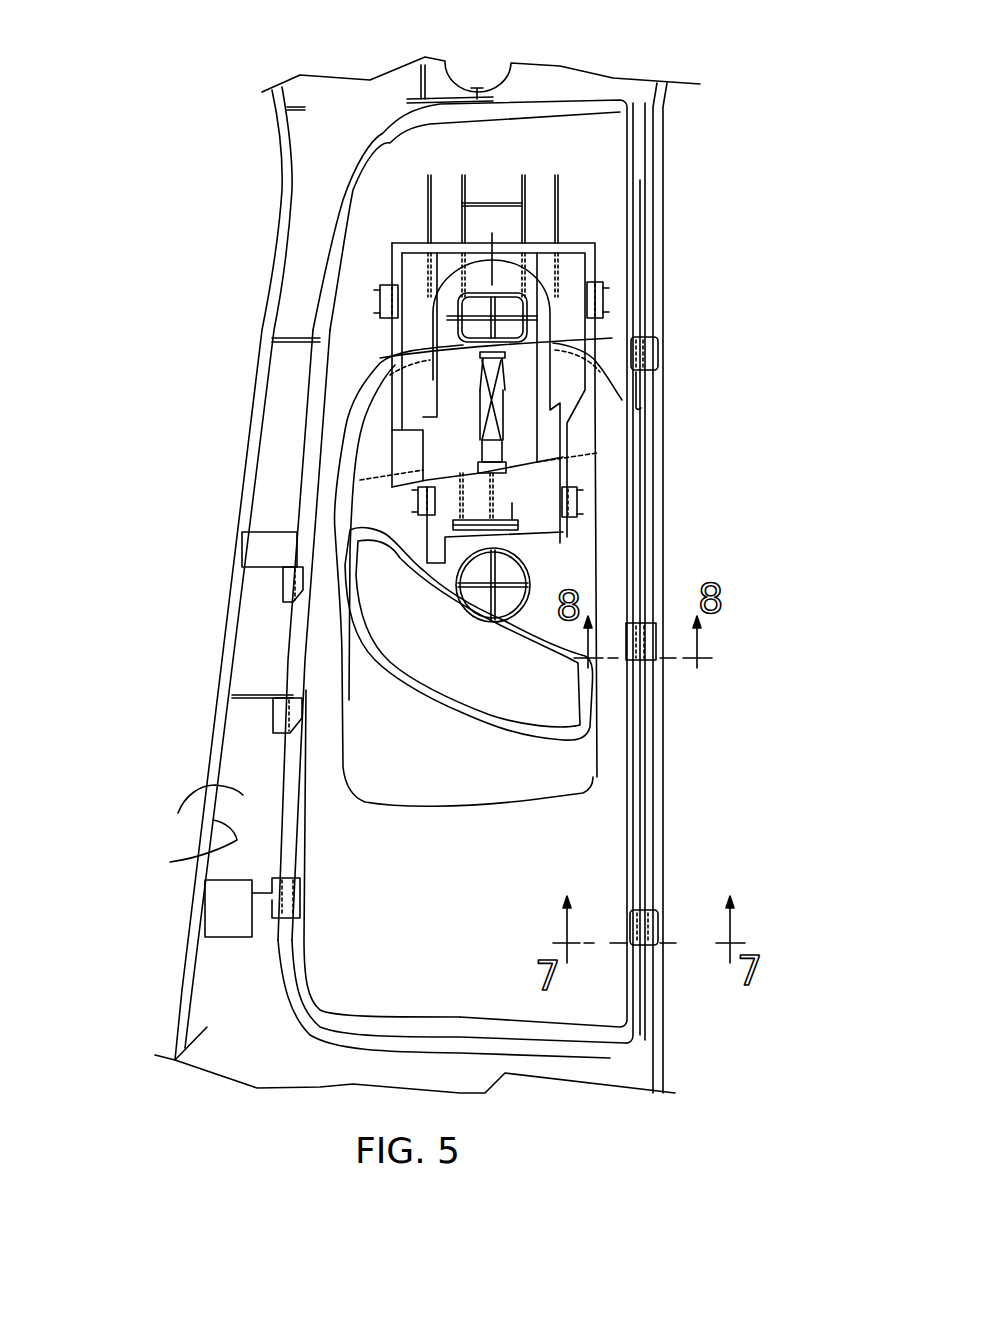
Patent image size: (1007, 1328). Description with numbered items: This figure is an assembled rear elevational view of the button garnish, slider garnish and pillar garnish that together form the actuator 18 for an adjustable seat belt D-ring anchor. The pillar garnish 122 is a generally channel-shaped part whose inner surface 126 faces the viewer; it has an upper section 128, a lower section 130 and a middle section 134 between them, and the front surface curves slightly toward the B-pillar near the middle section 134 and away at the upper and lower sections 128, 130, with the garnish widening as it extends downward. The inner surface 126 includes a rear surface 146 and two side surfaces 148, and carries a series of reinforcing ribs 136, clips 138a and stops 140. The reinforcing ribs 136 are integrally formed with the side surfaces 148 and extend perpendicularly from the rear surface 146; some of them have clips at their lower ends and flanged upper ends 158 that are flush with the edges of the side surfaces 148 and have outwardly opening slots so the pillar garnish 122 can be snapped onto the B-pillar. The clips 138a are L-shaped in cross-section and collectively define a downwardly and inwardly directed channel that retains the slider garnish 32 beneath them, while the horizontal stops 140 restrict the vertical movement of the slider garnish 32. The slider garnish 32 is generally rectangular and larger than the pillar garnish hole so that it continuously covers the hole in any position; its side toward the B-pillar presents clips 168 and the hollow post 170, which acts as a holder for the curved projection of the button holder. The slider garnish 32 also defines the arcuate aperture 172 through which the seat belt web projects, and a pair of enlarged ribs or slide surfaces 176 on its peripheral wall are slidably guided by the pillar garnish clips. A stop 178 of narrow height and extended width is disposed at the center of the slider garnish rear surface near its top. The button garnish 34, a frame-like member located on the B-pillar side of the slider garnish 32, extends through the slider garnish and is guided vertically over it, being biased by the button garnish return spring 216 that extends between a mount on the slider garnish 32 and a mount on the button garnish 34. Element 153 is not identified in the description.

The actuator 18 is at (178, 778).
The slider garnish 32 is at (607, 205).
The button garnish 34 is at (573, 335).
The pillar garnish 122 is at (175, 1060).
The inner surface 126 is at (215, 990).
The upper section 128 is at (550, 76).
The lower section 130 is at (622, 1073).
The middle section 134 is at (663, 540).
The reinforcing ribs 136 is at (277, 337).
The clips 138a is at (283, 584).
The stops 140 is at (447, 104).
The rear surface 146 is at (189, 808).
The side surfaces 148 is at (182, 849).
The bracket 153 is at (258, 548).
The flanged upper ends 158 is at (213, 915).
The clips 168 is at (380, 287).
The hollow post 170 is at (527, 307).
The arcuate aperture 172 is at (543, 710).
The slide surfaces 176 is at (643, 195).
The stop 178 is at (427, 173).
The button garnish return spring 216 is at (505, 412).